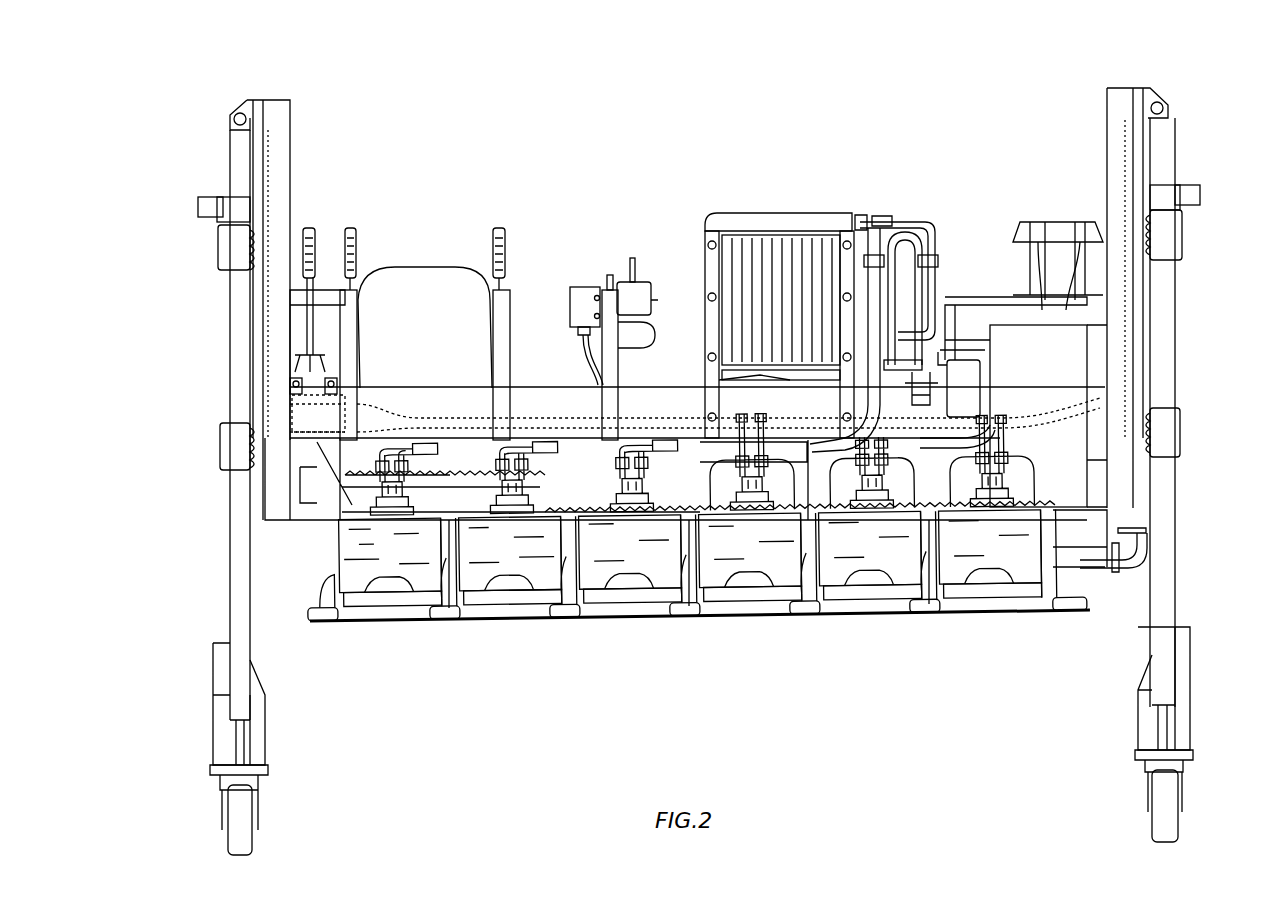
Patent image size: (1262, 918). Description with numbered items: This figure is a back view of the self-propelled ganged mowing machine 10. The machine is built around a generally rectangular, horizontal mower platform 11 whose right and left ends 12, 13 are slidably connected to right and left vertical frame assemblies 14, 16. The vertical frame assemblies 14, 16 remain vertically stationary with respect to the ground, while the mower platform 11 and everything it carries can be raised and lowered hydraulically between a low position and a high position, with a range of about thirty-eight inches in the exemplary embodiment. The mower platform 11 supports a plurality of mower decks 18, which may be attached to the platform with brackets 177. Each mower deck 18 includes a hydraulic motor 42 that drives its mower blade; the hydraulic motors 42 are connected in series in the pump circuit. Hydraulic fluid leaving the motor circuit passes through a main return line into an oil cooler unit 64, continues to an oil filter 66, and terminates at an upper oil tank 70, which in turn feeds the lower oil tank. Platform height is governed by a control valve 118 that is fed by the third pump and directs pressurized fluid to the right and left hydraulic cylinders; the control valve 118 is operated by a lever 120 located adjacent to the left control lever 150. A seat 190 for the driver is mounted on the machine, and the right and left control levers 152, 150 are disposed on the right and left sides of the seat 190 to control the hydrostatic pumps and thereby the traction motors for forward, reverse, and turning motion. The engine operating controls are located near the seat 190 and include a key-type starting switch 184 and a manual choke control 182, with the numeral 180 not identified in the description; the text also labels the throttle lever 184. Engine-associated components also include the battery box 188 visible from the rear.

The ganged mowing machine 10 is at (450, 132).
The mower platform 11 is at (665, 133).
The right end 12 is at (1115, 88).
The left end 13 is at (270, 100).
The right vertical frame assembly 14 is at (1180, 112).
The left vertical frame assembly 16 is at (205, 122).
The mower deck 18 is at (360, 628).
The hydraulic motor 42 is at (380, 500).
The oil cooler unit 64 is at (772, 198).
The oil filter 66 is at (960, 357).
The upper oil tank 70 is at (1055, 372).
The control valve 118 is at (300, 400).
The lever 120 is at (311, 228).
The left control lever 150 is at (350, 228).
The right control lever 152 is at (499, 228).
The bracket 177 is at (450, 608).
The control post 180 is at (635, 275).
The manual choke control 182 is at (600, 287).
The key-type starting switch 184 is at (660, 282).
The battery box 188 is at (1045, 222).
The seat 190 is at (450, 340).